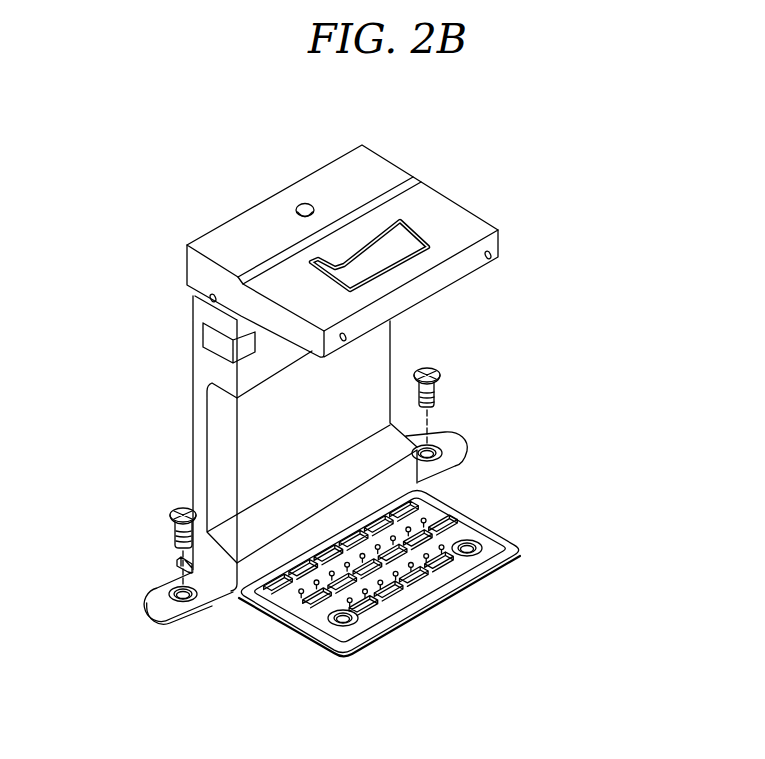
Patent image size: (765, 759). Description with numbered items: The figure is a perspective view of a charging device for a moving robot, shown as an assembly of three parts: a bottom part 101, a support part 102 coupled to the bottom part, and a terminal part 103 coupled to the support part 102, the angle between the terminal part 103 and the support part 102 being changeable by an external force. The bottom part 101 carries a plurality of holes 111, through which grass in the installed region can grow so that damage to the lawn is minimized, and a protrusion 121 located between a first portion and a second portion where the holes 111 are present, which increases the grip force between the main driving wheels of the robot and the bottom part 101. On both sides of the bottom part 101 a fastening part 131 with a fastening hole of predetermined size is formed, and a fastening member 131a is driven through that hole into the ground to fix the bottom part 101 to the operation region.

The terminal part 103 is at (377, 162).
The support part 102 is at (199, 425).
The bottom part 101 is at (166, 608).
The fastening member 131a is at (169, 513).
The fastening part 131 is at (210, 607).
The protrusion 121 is at (425, 520).
The holes 111 is at (452, 531).